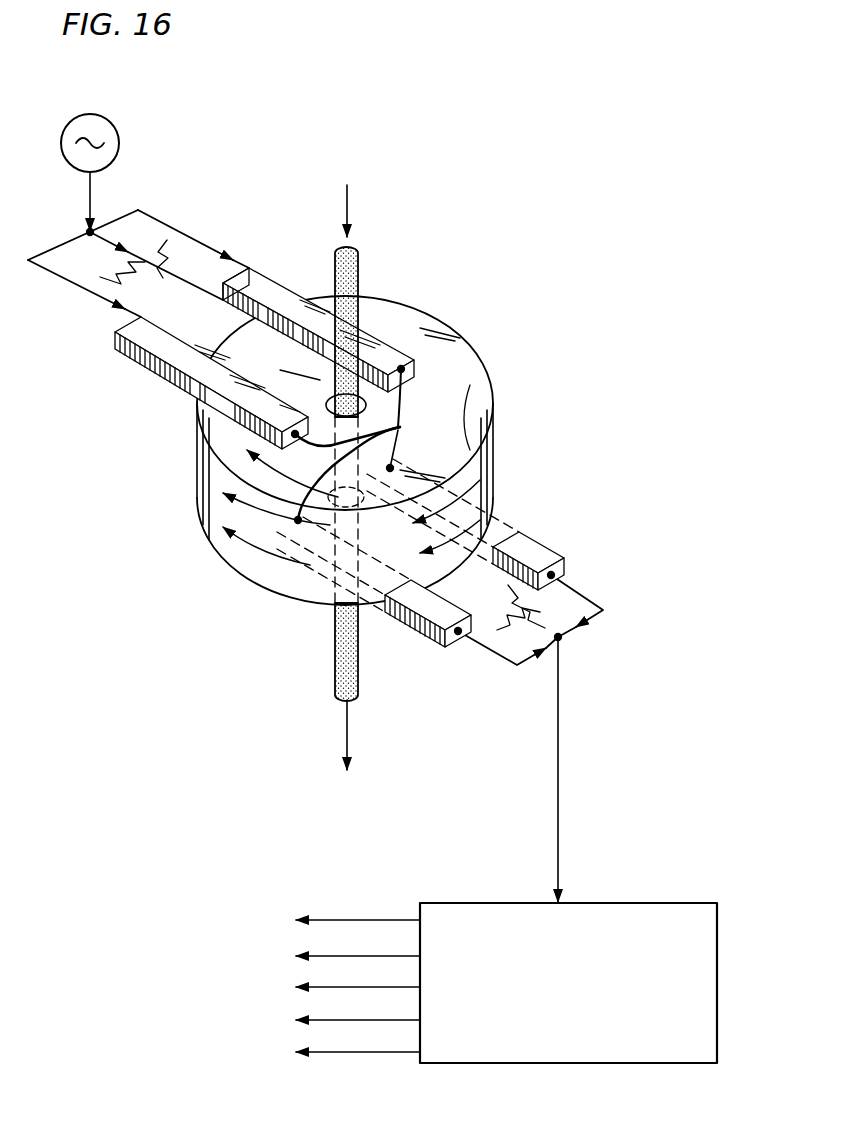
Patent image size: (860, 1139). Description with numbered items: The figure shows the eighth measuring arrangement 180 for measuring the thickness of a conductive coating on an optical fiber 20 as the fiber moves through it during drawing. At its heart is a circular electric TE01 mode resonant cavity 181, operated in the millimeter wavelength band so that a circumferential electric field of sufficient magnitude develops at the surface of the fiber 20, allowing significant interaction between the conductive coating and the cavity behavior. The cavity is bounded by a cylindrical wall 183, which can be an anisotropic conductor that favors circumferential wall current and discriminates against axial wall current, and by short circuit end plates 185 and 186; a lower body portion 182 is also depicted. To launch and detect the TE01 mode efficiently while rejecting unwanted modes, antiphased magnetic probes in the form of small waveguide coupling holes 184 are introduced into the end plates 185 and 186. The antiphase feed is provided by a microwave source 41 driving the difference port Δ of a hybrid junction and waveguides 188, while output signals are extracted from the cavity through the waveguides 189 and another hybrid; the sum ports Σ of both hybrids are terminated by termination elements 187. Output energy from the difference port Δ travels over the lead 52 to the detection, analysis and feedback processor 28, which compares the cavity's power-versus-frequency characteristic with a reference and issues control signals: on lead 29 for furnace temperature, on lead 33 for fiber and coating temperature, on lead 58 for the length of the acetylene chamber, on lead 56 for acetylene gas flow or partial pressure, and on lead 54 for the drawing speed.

The microwave source 41 is at (115, 152).
The termination elements 187 is at (315, 437).
The waveguides 188 is at (258, 289).
The optical fiber 20 is at (358, 277).
The measuring arrangement 180 is at (503, 272).
The short circuit end plate 185 is at (440, 357).
The resonant cavity 181 is at (455, 438).
The waveguide coupling holes 184 is at (367, 446).
The waveguides 189 is at (530, 547).
The cylindrical wall 183 is at (197, 470).
The lower ring body 182 is at (262, 512).
The short circuit end plate 186 is at (292, 592).
The lead 52 is at (560, 683).
The detection, analysis and feedback processor 28 is at (650, 903).
The lead 29 is at (334, 920).
The lead 33 is at (360, 956).
The lead 58 is at (368, 987).
The lead 56 is at (370, 1020).
The lead 54 is at (378, 1053).